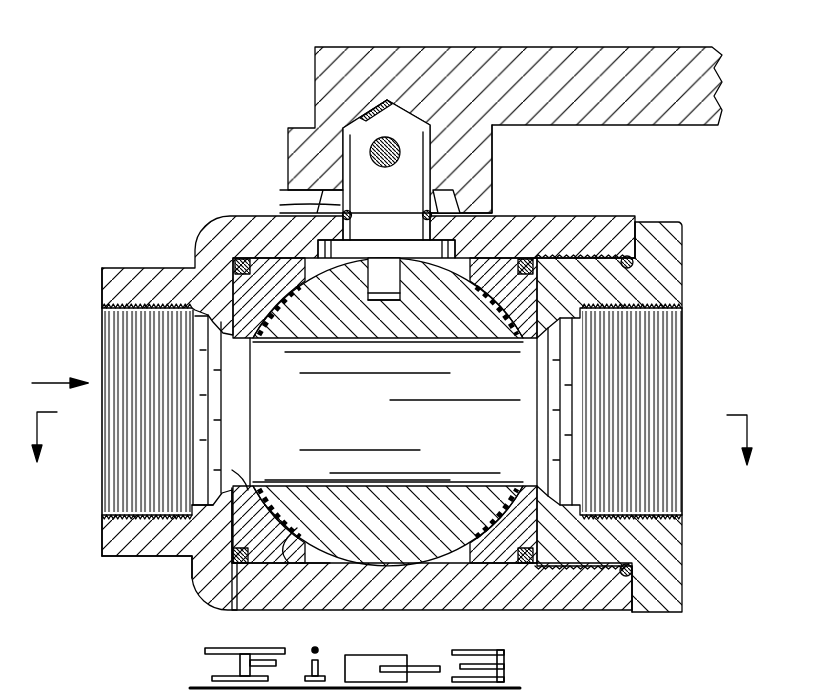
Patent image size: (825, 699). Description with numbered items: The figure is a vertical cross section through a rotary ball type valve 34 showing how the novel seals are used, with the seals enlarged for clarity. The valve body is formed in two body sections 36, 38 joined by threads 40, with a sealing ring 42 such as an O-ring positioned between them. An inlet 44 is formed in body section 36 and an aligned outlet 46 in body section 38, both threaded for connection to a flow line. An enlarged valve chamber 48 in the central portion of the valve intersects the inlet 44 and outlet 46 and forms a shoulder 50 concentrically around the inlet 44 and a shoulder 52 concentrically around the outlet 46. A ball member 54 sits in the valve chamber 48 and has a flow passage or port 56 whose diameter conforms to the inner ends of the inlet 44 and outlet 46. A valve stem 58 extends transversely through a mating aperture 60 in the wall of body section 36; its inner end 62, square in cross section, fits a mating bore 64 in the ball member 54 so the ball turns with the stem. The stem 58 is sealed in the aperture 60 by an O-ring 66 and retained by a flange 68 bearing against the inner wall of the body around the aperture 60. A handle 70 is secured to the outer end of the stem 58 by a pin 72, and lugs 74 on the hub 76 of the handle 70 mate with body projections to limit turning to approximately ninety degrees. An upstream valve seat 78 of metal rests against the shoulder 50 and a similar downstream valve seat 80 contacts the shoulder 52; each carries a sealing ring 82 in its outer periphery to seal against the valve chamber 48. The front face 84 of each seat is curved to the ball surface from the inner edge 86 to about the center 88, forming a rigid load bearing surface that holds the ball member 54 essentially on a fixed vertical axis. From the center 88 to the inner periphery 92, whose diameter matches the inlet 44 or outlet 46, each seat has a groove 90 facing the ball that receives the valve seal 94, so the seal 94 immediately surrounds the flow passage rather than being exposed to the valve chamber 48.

The rotary type valve 34 is at (203, 222).
The body section 36 is at (206, 235).
The body section 38 is at (668, 238).
The threads 40 is at (573, 262).
The sealing ring 42 is at (632, 572).
The inlet 44 is at (118, 333).
The outlet 46 is at (655, 354).
The valve chamber 48 is at (440, 563).
The shoulder 50 is at (192, 566).
The shoulder 52 is at (538, 547).
The ball member 54 is at (390, 495).
The flow passage or port 56 is at (378, 408).
The valve stem 58 is at (405, 160).
The aperture 60 is at (338, 200).
The inner end of the valve stem 62 is at (400, 287).
The bore 64 is at (398, 302).
The O-ring 66 is at (338, 214).
The flange 68 is at (326, 247).
The handle 70 is at (513, 80).
The pin 72 is at (376, 138).
The lug 74 is at (478, 210).
The hub 76 is at (473, 177).
The upstream valve seat 78 is at (250, 300).
The downstream valve seat 80 is at (520, 302).
The sealing ring 82 is at (232, 573).
The front face 84 is at (287, 565).
The inner edge 86 is at (312, 565).
The center of the seat 88 is at (269, 540).
The groove 90 is at (232, 522).
The inner periphery 92 is at (242, 480).
The valve seal 94 is at (262, 490).